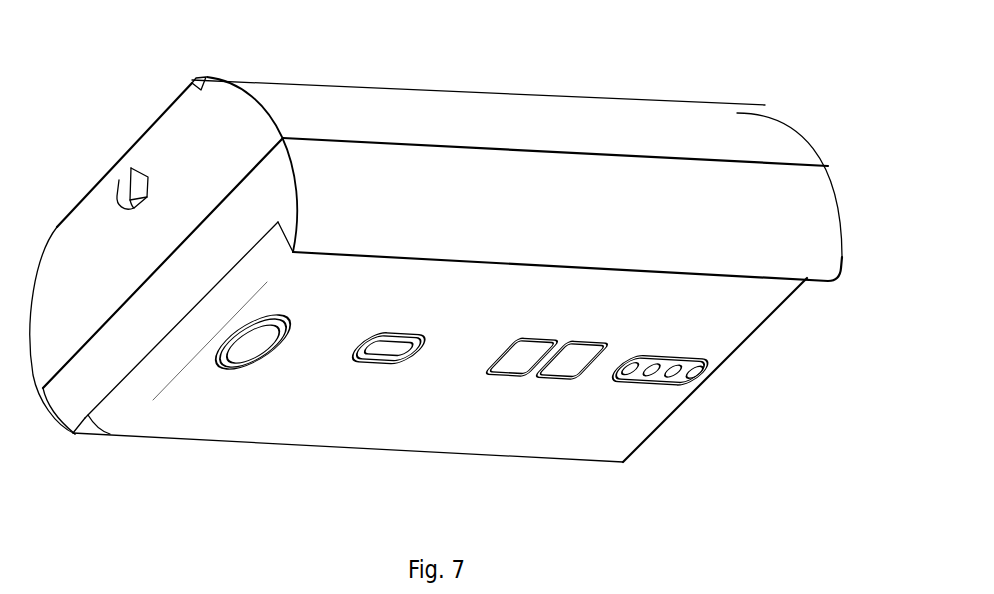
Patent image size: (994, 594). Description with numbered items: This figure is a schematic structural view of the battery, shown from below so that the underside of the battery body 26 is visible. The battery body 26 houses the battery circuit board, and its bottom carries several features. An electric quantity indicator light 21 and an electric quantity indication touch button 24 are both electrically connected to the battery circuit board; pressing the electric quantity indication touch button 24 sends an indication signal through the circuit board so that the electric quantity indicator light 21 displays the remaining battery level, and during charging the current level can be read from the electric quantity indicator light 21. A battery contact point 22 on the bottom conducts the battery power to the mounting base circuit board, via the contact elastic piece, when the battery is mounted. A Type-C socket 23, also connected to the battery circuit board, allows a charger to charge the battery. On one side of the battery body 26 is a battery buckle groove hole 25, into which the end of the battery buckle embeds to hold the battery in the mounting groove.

The electric quantity indicator light 21 is at (677, 373).
The battery contact point 22 is at (560, 380).
The Type-C socket 23 is at (387, 363).
The electric quantity indication touch button 24 is at (240, 355).
The battery buckle groove hole 25 is at (127, 182).
The battery body 26 is at (353, 170).